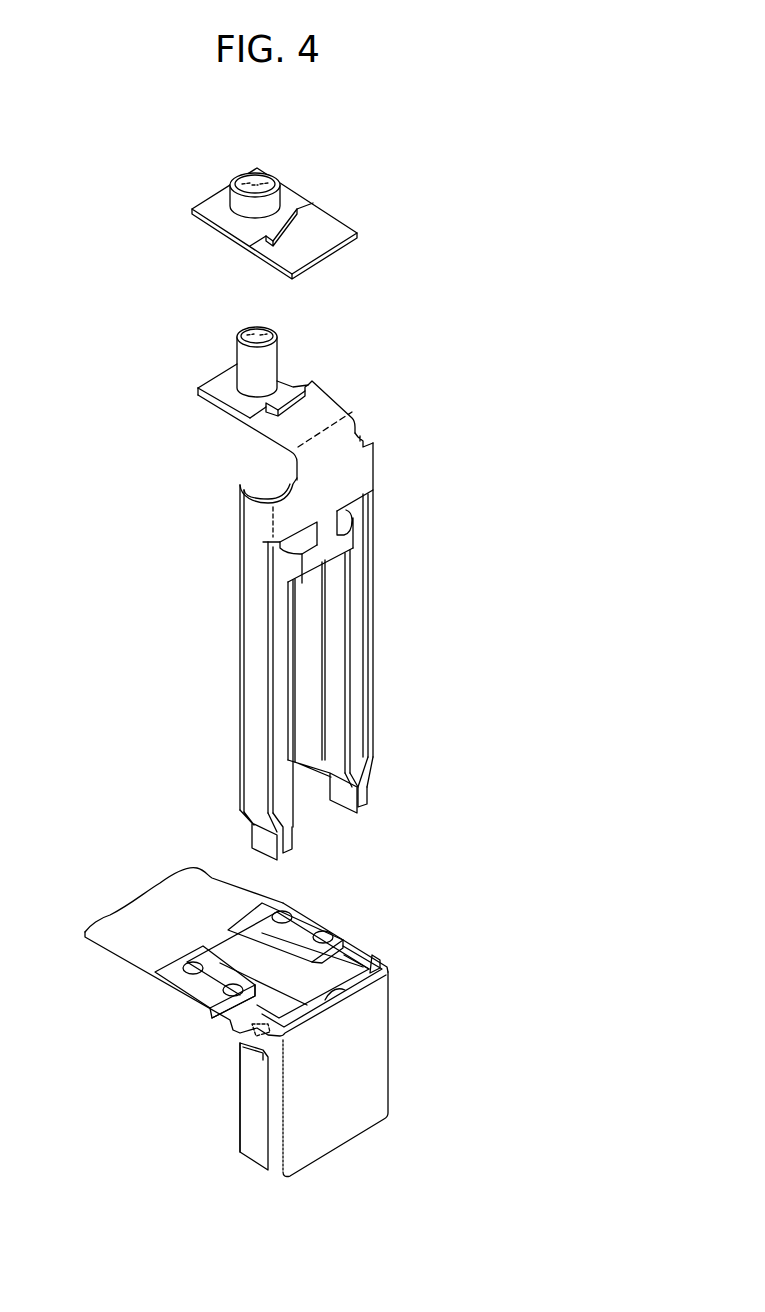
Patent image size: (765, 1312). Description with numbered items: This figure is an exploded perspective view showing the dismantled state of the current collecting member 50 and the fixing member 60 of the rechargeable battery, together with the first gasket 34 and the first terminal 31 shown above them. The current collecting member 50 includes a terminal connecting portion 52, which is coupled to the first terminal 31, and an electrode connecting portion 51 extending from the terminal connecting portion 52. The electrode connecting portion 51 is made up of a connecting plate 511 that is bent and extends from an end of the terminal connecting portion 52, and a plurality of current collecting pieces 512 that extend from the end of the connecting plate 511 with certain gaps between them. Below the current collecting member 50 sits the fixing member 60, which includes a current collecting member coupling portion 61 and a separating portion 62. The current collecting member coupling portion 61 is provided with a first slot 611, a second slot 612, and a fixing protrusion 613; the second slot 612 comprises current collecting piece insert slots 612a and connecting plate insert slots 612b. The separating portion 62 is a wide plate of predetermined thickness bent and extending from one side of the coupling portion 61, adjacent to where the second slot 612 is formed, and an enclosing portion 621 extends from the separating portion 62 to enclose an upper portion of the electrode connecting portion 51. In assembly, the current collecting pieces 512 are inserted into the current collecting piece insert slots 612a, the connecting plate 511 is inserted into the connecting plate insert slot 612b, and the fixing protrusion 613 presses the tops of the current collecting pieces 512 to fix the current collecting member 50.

The first gasket 34 is at (293, 203).
The first terminal 31 is at (270, 350).
The current collecting member 50 is at (378, 455).
The terminal connecting portion 52 is at (335, 405).
The electrode connecting portion 51 is at (373, 589).
The connecting plate 511 is at (365, 475).
The current collecting pieces 512 is at (272, 713).
The fixing member 60 is at (168, 863).
The current collecting member coupling portion 61 is at (125, 927).
The first slot 611 is at (250, 970).
The fixing protrusion 613 is at (262, 1025).
The second slot 612 is at (439, 987).
The current collecting piece insert slots 612a is at (383, 966).
The connecting plate insert slots 612b is at (383, 1000).
The separating portion 62 is at (353, 1075).
The enclosing portion 621 is at (252, 1100).